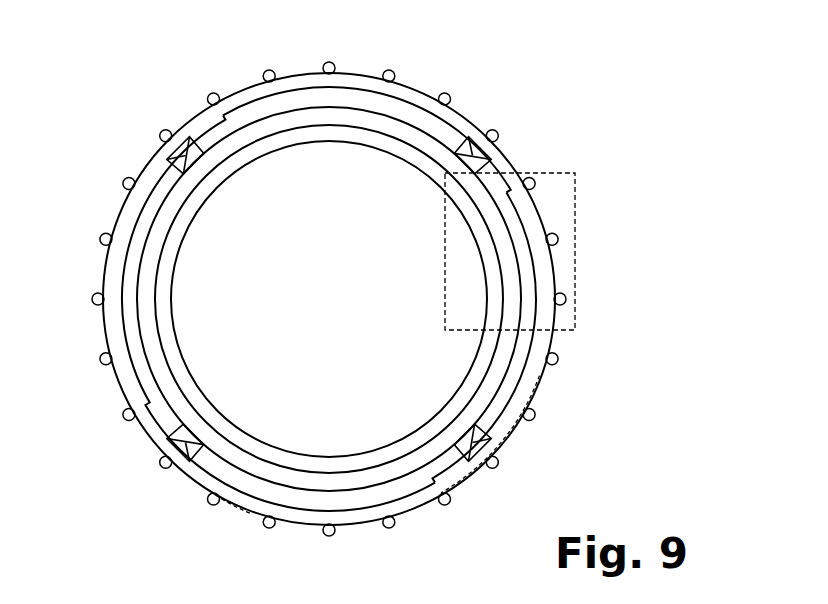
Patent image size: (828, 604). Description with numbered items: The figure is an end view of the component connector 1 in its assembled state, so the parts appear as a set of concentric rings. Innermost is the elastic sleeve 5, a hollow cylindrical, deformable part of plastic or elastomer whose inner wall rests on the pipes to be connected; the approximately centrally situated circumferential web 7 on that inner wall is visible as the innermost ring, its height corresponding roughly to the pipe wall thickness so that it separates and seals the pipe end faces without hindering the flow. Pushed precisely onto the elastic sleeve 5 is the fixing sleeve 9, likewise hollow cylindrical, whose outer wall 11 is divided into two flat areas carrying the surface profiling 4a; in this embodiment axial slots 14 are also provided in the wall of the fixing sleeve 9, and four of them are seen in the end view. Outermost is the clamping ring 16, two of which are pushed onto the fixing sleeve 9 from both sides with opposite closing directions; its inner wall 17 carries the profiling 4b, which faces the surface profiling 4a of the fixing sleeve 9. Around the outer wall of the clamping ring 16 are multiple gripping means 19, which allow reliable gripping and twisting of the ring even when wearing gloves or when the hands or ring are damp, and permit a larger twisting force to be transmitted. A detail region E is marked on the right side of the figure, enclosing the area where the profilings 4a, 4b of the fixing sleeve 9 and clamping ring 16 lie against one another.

The component connector 1 is at (573, 155).
The surface profiling 4a is at (532, 298).
The profiling 4b is at (537, 268).
The elastic sleeve 5 is at (415, 463).
The circumferential web 7 is at (488, 289).
The fixing sleeve 9 is at (233, 482).
The outer wall 11 is at (311, 88).
The axial slots 14 is at (185, 158).
The clamping ring 16 is at (104, 318).
The inner wall 17 is at (292, 92).
The gripping means 19 is at (163, 132).
The detail region E is at (578, 207).